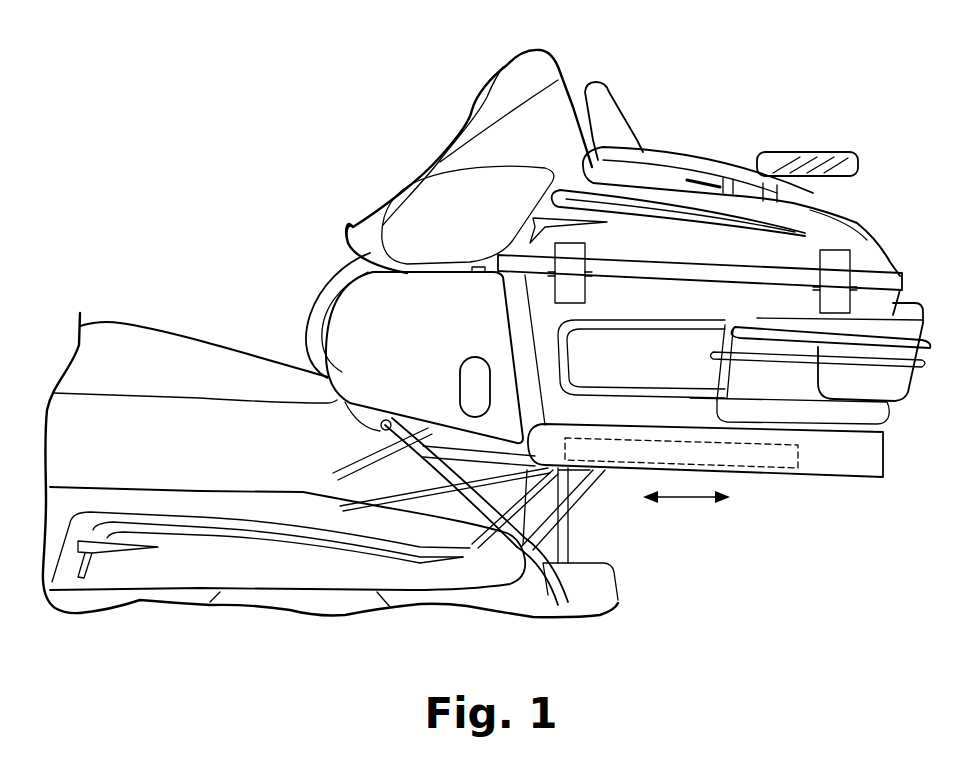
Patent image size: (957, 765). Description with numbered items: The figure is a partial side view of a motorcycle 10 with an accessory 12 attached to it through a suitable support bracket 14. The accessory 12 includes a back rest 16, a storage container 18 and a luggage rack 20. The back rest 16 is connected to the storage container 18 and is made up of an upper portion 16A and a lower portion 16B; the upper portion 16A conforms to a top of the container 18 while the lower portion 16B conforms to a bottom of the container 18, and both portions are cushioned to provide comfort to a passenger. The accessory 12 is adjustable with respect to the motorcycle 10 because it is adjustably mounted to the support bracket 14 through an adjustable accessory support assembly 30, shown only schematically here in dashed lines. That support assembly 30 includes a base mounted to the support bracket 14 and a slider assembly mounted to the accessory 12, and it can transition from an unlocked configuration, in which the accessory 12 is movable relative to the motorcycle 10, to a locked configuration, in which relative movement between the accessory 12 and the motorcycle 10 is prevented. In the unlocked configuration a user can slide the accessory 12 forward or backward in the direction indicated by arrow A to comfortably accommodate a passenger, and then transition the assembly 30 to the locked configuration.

The motorcycle 10 is at (143, 613).
The accessory 12 is at (703, 140).
The support bracket 14 is at (590, 496).
The back rest 16 is at (428, 117).
The upper portion 16A is at (503, 73).
The lower portion 16B is at (305, 330).
The storage container 18 is at (884, 251).
The luggage rack 20 is at (828, 151).
The adjustable accessory support assembly 30 is at (752, 470).
The arrow A is at (683, 500).